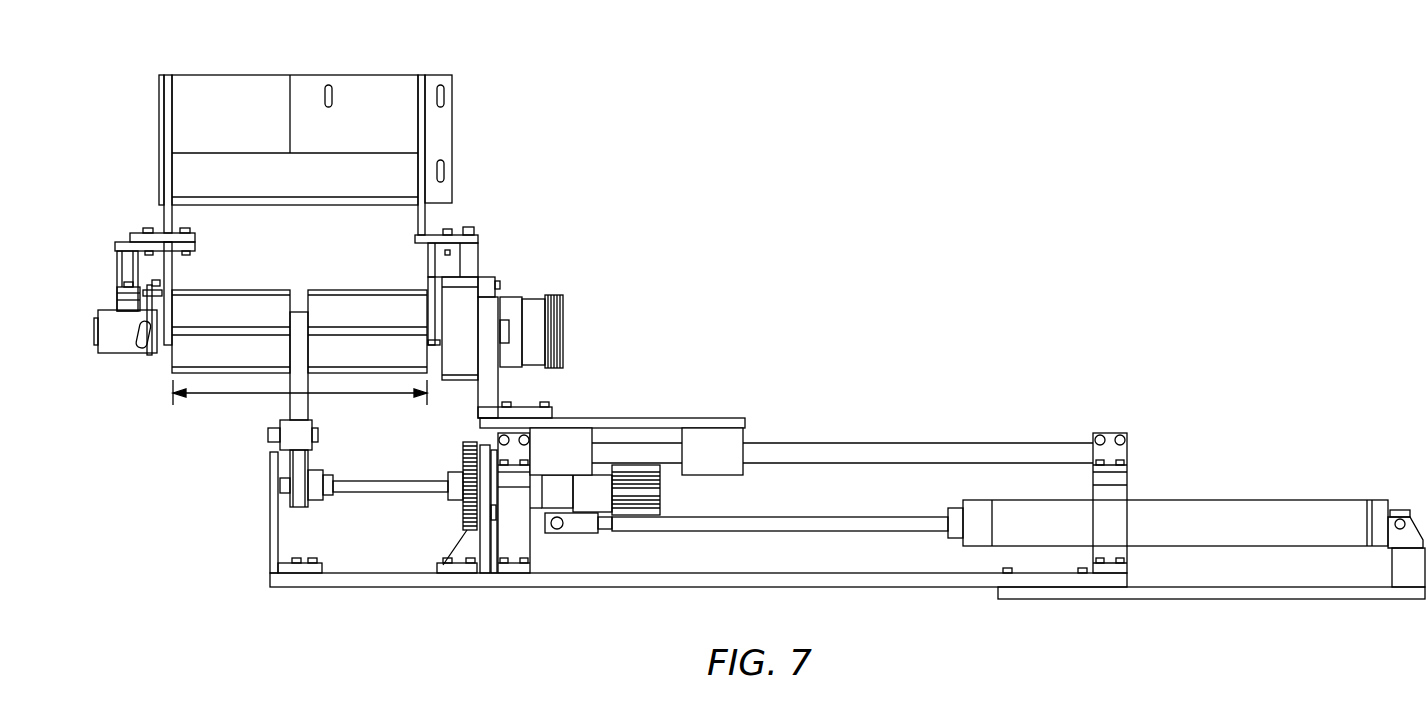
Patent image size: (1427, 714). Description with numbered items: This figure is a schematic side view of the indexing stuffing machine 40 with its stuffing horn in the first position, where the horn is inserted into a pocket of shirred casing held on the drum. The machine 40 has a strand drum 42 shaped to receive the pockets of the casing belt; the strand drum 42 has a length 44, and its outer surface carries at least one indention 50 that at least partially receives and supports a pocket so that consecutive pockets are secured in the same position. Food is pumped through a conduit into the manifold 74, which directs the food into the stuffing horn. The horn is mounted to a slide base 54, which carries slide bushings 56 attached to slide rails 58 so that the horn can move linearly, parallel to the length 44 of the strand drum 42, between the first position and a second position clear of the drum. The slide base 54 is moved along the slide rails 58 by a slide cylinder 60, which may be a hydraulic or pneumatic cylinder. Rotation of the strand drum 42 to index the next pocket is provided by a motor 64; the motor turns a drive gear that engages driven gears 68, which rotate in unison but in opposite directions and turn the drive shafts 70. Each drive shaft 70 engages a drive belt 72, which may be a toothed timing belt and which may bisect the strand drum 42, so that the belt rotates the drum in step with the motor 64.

The stuffing machine 40 is at (753, 270).
The strand drum 42 is at (250, 283).
The length 44 is at (218, 395).
The indention 50 is at (363, 303).
The slide base 54 is at (700, 418).
The slide bushings 56 is at (574, 467).
The slide rails 58 is at (915, 443).
The slide cylinder 60 is at (1248, 500).
The motor 64 is at (600, 480).
The driven gears 68 is at (463, 512).
The drive shafts 70 is at (405, 480).
The drive belt 72 is at (298, 406).
The manifold 74 is at (500, 391).